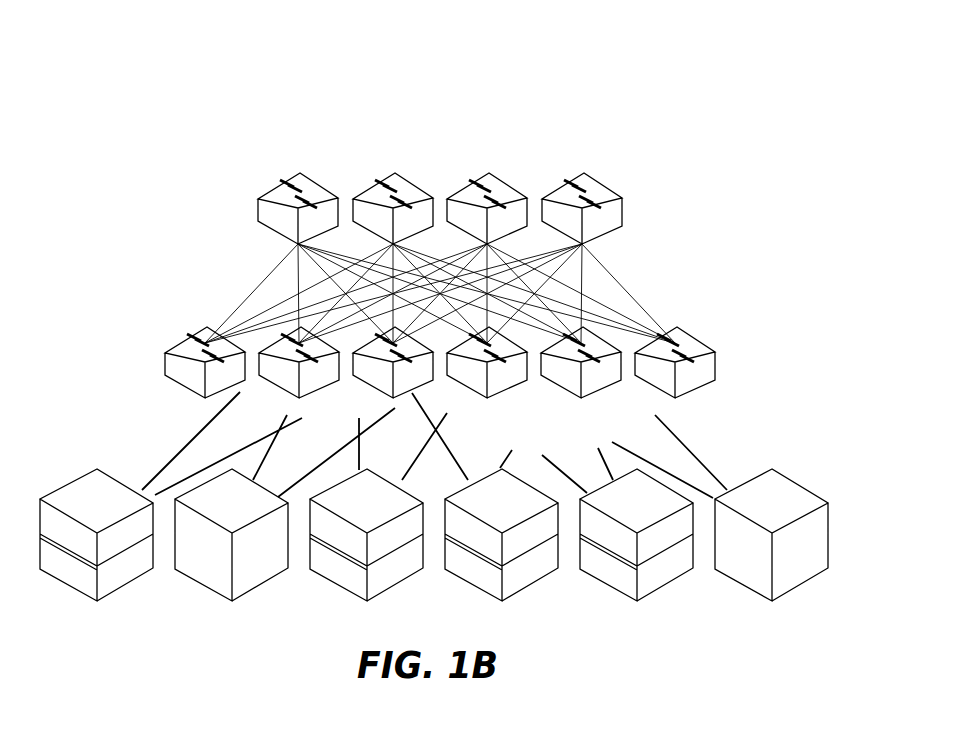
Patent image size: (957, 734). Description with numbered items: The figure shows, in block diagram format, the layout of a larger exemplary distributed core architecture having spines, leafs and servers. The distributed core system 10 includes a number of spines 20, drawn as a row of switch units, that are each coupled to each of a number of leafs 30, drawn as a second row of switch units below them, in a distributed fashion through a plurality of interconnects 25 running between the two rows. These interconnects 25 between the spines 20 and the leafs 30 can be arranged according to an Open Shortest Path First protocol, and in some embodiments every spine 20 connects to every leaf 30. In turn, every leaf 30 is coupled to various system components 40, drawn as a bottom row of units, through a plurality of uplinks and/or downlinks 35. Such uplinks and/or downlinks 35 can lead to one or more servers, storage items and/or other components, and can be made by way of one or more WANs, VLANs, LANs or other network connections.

The distributed core system 10 is at (395, 114).
The spines 20 is at (382, 183).
The interconnects 25 is at (638, 276).
The leafs 30 is at (283, 338).
The uplinks and/or downlinks 35 is at (714, 459).
The system components 40 is at (207, 585).